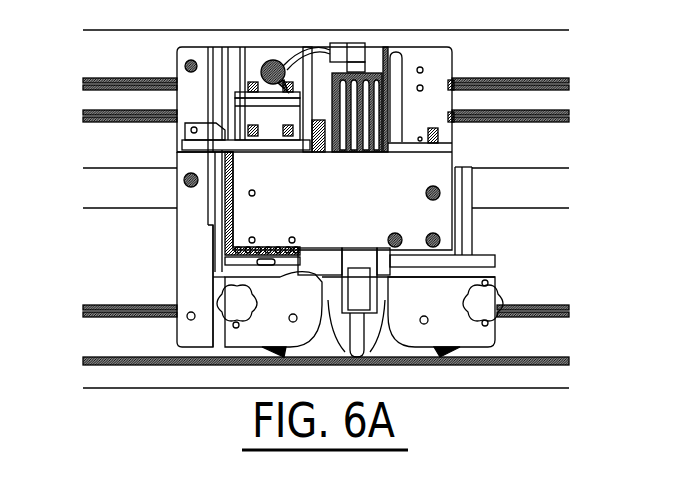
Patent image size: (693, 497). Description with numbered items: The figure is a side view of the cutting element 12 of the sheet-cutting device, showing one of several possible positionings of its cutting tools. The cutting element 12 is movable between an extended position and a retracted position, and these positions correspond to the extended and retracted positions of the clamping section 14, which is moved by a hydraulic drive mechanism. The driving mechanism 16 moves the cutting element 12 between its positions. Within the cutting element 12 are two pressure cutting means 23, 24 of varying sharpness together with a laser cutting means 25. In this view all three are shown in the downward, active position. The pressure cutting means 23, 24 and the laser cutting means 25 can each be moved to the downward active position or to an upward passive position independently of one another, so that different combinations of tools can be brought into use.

The cutting element 12 is at (438, 62).
The clamping section 14 is at (550, 338).
The driving mechanism 16 is at (550, 103).
The pressure cutting means 23 is at (283, 354).
The pressure cutting means 24 is at (428, 355).
The laser cutting means 25 is at (338, 337).